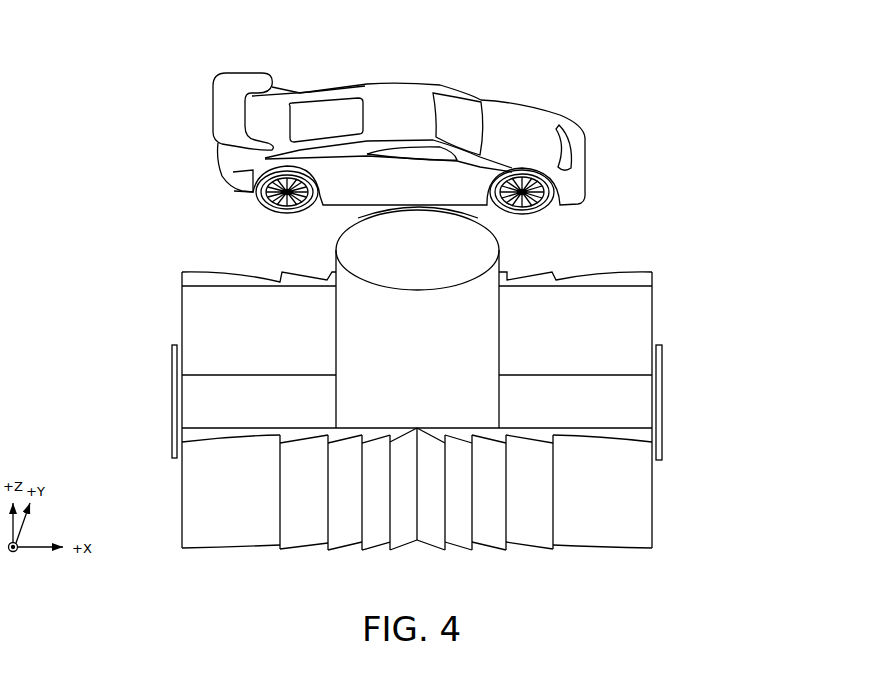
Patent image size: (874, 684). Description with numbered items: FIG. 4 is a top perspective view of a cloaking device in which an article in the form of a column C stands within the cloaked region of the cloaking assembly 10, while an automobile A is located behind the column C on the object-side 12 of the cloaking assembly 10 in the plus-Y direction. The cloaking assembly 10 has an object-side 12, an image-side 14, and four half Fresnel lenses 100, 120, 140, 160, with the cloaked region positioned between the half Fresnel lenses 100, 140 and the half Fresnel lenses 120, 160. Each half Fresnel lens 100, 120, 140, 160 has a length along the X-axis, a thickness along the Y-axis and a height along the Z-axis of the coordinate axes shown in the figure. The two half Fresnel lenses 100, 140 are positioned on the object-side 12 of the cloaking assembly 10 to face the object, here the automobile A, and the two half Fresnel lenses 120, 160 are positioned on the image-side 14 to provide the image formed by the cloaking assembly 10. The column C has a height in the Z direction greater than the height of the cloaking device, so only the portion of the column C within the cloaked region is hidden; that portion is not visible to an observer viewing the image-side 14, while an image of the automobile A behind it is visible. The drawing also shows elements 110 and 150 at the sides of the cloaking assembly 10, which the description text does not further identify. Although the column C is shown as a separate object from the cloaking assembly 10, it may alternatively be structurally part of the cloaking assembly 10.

The automobile A is at (399, 115).
The cloaking assembly 10 is at (420, 371).
The object-side 12 is at (420, 334).
The image-side 14 is at (433, 533).
The half Fresnel lens 100 is at (636, 311).
The right side flange 110 is at (721, 402).
The half Fresnel lens 120 is at (597, 489).
The half Fresnel lens 140 is at (194, 313).
The left side flange 150 is at (117, 401).
The half Fresnel lens 160 is at (253, 533).
The column C is at (424, 347).